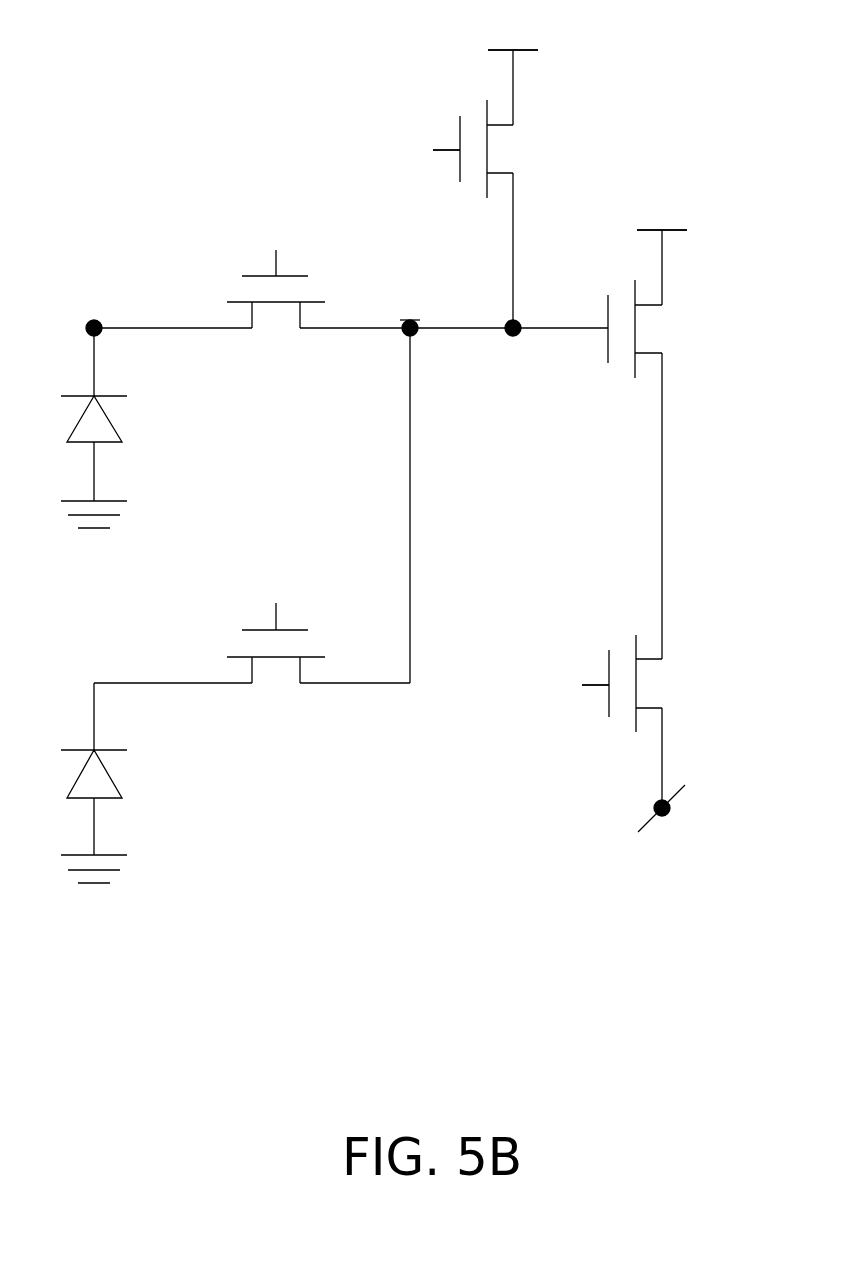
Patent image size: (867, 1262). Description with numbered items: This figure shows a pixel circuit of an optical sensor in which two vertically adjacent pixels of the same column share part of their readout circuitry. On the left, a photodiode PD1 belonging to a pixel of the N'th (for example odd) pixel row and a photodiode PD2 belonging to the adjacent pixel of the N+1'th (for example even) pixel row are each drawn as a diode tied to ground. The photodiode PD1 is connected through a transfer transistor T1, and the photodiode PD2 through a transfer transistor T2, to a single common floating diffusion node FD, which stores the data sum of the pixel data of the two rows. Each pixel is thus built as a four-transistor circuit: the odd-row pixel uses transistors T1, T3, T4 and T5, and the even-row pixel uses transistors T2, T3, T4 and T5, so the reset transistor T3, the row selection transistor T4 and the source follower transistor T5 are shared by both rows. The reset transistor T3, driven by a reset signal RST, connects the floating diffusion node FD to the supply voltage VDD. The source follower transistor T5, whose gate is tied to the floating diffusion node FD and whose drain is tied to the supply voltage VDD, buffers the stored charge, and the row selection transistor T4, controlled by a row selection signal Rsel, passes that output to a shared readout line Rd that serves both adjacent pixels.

The transfer transistor T1 is at (276, 266).
The transfer transistor T2 is at (276, 621).
The reset transistor T3 is at (501, 124).
The row selection transistor T4 is at (647, 721).
The source follower transistor T5 is at (661, 304).
The photodiode PD1 is at (128, 462).
The photodiode PD2 is at (126, 816).
The floating diffusion node FD is at (434, 349).
The reset signal RST is at (416, 149).
The row selection signal Rsel is at (556, 688).
The supply voltage VDD is at (582, 119).
The readout line Rd is at (662, 747).